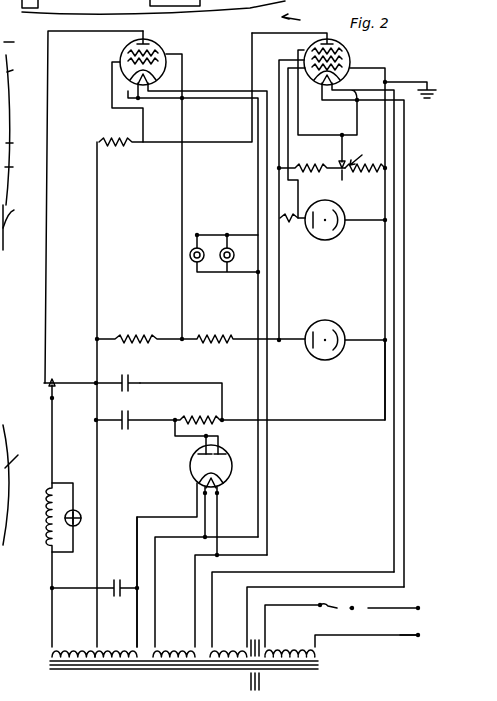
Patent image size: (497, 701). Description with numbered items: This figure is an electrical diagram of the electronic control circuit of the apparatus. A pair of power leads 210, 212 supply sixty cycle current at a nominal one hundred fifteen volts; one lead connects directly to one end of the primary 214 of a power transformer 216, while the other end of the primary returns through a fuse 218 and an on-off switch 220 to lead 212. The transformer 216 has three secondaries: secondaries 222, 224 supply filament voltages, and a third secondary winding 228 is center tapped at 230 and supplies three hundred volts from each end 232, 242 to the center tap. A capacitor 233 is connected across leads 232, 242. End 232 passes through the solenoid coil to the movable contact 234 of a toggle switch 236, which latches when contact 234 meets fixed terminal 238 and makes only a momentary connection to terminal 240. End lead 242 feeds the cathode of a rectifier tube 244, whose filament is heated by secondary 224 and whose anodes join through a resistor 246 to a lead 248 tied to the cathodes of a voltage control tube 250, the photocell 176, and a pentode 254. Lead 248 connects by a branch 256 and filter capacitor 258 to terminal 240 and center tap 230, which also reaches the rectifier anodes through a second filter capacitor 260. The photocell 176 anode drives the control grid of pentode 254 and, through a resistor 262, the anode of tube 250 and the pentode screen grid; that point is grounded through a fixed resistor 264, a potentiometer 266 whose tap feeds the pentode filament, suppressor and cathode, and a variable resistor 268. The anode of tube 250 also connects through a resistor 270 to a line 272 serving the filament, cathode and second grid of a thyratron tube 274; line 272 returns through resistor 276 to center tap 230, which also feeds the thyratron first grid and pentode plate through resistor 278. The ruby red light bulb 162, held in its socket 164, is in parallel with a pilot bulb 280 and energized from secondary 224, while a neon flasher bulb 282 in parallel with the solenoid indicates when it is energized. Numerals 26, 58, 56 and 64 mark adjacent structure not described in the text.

The wall 26 is at (18, 104).
The member 58 is at (19, 70).
The member 56 is at (17, 181).
The member 64 is at (19, 452).
The ruby red light bulb 162 is at (190, 243).
The socket 164 is at (45, 531).
The photocell 176 is at (345, 232).
The power lead 210 is at (416, 636).
The power lead 212 is at (396, 600).
The primary 214 is at (290, 641).
The power transformer 216 is at (192, 678).
The fuse 218 is at (335, 609).
The on-off switch 220 is at (360, 617).
The secondary 222 is at (228, 640).
The secondary 224 is at (174, 640).
The secondary winding 228 is at (113, 641).
The center tap 230 is at (94, 625).
The end lead 232 is at (50, 648).
The capacitor 233 is at (117, 598).
The movable contact 234 is at (50, 402).
The toggle switch 236 is at (54, 373).
The fixed terminal 238 is at (46, 384).
The terminal 240 is at (55, 384).
The end lead 242 is at (137, 570).
The rectifier tube 244 is at (191, 468).
The resistor 246 is at (200, 412).
The lead 248 is at (330, 421).
The voltage control tube 250 is at (339, 355).
The pentode 254 is at (350, 58).
The branch 256 is at (197, 377).
The filter capacitor 258 is at (127, 379).
The second filter capacitor 260 is at (136, 412).
The resistor 262 is at (293, 223).
The fixed resistor 264 is at (311, 159).
The potentiometer 266 is at (335, 164).
The variable resistor 268 is at (377, 153).
The resistor 270 is at (237, 327).
The line 272 is at (200, 253).
The thyratron tube 274 is at (161, 43).
The resistor 276 is at (132, 336).
The resistor 278 is at (114, 136).
The pilot bulb 280 is at (229, 263).
The neon flasher bulb 282 is at (82, 490).